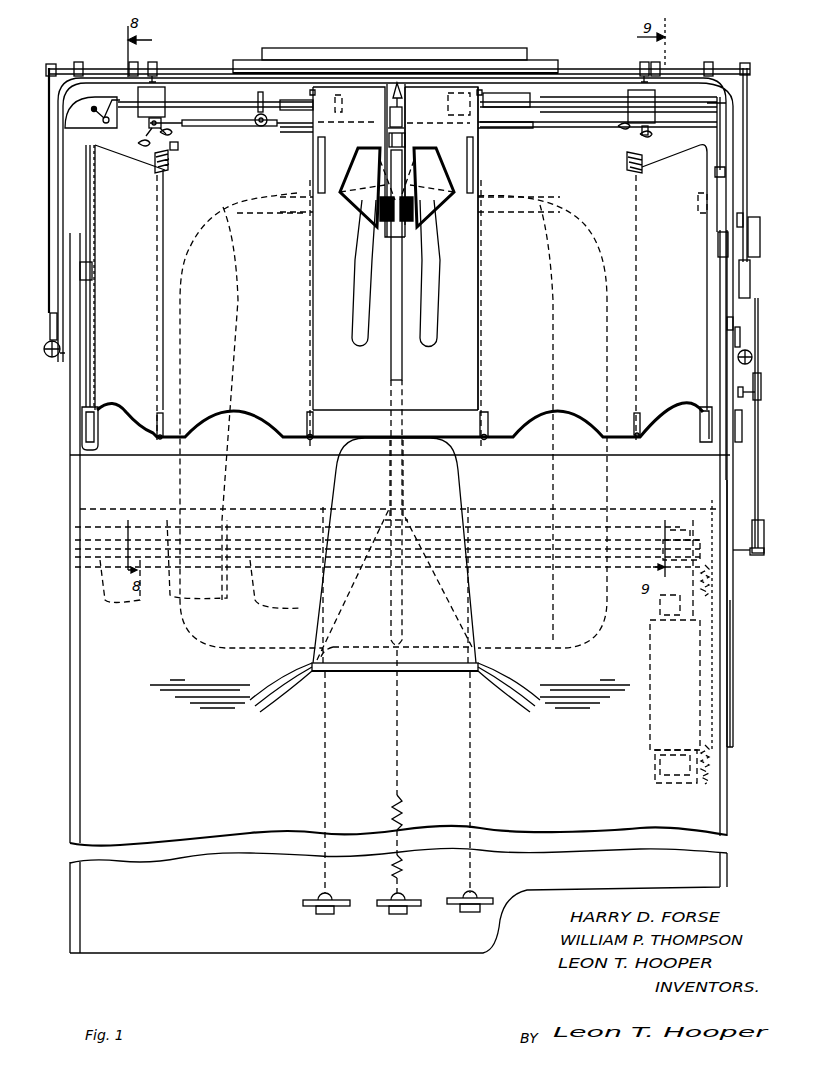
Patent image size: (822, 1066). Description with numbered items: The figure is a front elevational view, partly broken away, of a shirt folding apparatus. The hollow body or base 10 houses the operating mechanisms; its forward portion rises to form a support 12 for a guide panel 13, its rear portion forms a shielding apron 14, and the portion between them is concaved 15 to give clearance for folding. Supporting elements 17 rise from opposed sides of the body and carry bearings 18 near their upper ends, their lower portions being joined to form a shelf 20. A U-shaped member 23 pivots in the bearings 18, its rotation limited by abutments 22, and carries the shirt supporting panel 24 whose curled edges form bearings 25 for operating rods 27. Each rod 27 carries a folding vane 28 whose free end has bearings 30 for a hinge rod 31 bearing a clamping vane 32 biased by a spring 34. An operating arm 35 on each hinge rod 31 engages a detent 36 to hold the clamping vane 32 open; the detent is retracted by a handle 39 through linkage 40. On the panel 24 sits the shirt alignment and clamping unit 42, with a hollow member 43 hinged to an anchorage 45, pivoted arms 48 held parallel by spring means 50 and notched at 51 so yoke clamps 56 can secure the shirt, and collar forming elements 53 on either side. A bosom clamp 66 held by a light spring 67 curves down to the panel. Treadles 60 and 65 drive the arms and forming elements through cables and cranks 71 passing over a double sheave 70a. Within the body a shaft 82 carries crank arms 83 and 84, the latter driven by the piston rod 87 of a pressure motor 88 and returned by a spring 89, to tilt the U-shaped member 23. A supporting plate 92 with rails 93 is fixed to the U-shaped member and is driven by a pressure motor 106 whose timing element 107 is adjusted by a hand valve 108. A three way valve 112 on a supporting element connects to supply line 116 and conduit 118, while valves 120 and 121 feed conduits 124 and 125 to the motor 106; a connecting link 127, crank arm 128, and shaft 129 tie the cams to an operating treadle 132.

The body or base 10 is at (90, 722).
The support 12 is at (402, 494).
The guide panel 13 is at (340, 483).
The apron 14 is at (505, 470).
The concaved portion 15 is at (262, 690).
The supporting elements 17 is at (73, 410).
The bearings 18 is at (91, 247).
The shelf 20 is at (260, 572).
The abutments 22 is at (62, 362).
The U-shaped member 23 is at (193, 84).
The shirt supporting panel 24 is at (468, 359).
The bearings 25 is at (310, 95).
The operating rods 27 is at (308, 273).
The folding vane 28 is at (300, 360).
The bearings 30 is at (170, 147).
The hinge rods 31 is at (160, 316).
The clamping vane 32 is at (142, 203).
The spring 34 is at (170, 165).
The operating arm 35 is at (160, 140).
The detent 36 is at (149, 128).
The operating handle 39 is at (44, 354).
The linkage 40 is at (48, 106).
The shirt alignment and clamping unit 42 is at (378, 137).
The hollow member 43 is at (403, 114).
The anchorage 45 is at (402, 91).
The pivotally mounted arms 48 is at (355, 306).
The spring means 50 is at (415, 230).
The clamp receiving notches 51 is at (360, 249).
The forming elements 53 is at (360, 155).
The yoke clamps 56 is at (318, 160).
The treadle 60 is at (305, 905).
The treadle 65 is at (380, 905).
The bosom clamp 66 is at (403, 362).
The light spring 67 is at (406, 141).
The double sheave 70a is at (94, 276).
The bell cranks, crank arms and cables 71 is at (114, 101).
The shaft 82 is at (482, 503).
The crank arms 83 is at (98, 448).
The crank arm 84 is at (663, 539).
The piston rod 87 is at (660, 605).
The pressure motor 88 is at (650, 645).
The spring 89 is at (700, 785).
The supporting plate 92 is at (243, 60).
The rails 93 is at (518, 56).
The pressure motor 106 is at (530, 115).
The liquid displacement timing element 107 is at (278, 127).
The hand operated valve 108 is at (255, 126).
The three way valve 112 is at (743, 427).
The supply line 116 is at (735, 580).
The conduit 118 is at (733, 707).
The three way valve 120 is at (750, 275).
The three way valve 121 is at (745, 220).
The conduit 124 is at (676, 93).
The conduit 125 is at (525, 106).
The connecting link 127 is at (752, 455).
The crank arm 128 is at (764, 545).
The shaft 129 is at (743, 556).
The operating treadle 132 is at (455, 903).